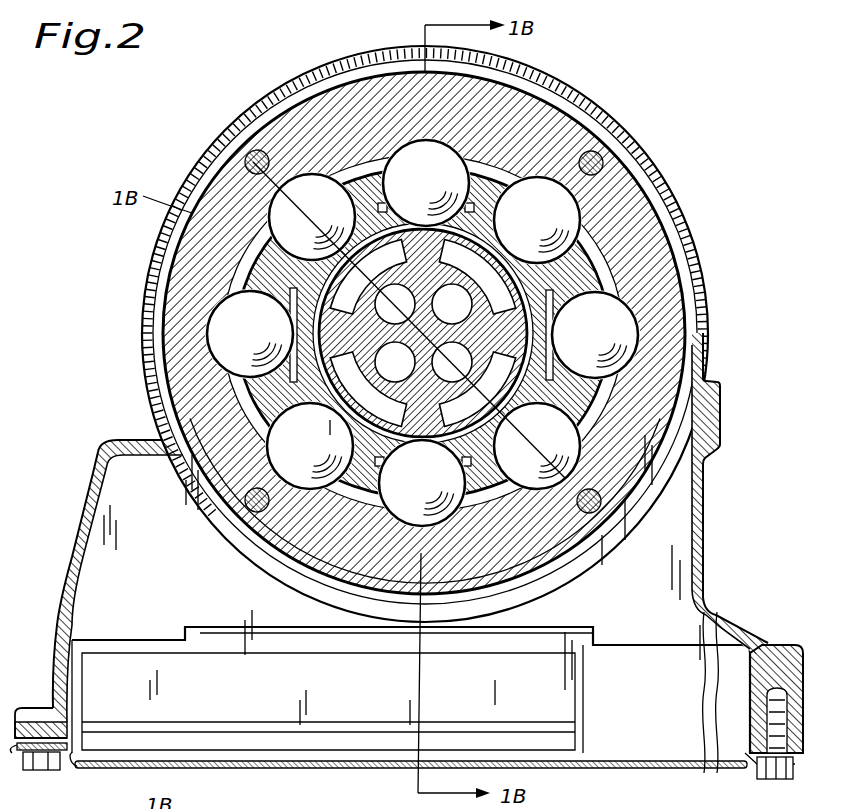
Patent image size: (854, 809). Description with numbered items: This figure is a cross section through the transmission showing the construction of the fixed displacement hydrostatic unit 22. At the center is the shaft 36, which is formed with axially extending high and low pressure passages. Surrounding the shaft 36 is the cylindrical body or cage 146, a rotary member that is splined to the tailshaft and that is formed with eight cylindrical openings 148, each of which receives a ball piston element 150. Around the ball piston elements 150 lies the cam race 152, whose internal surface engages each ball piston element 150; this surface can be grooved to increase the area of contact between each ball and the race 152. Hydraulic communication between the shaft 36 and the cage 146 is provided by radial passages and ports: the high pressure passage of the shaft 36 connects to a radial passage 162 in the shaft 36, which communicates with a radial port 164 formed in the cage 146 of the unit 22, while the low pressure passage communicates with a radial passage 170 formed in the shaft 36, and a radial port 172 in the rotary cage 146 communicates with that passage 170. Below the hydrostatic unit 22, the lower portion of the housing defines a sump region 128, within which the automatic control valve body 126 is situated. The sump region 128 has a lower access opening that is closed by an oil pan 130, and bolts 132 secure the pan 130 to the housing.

The fixed displacement hydrostatic unit 22 is at (216, 334).
The shaft 36 is at (416, 447).
The automatic control valve body 126 is at (563, 711).
The sump region 128 is at (686, 755).
The oil pan 130 is at (615, 770).
The bolts 132 is at (757, 770).
The cage 146 is at (252, 398).
The cylindrical openings 148 is at (270, 302).
The ball piston element 150 is at (218, 369).
The cam race 152 is at (193, 233).
The radial passage 162 is at (312, 217).
The radial port 164 is at (312, 217).
The radial passage 170 is at (537, 446).
The radial port 172 is at (537, 446).